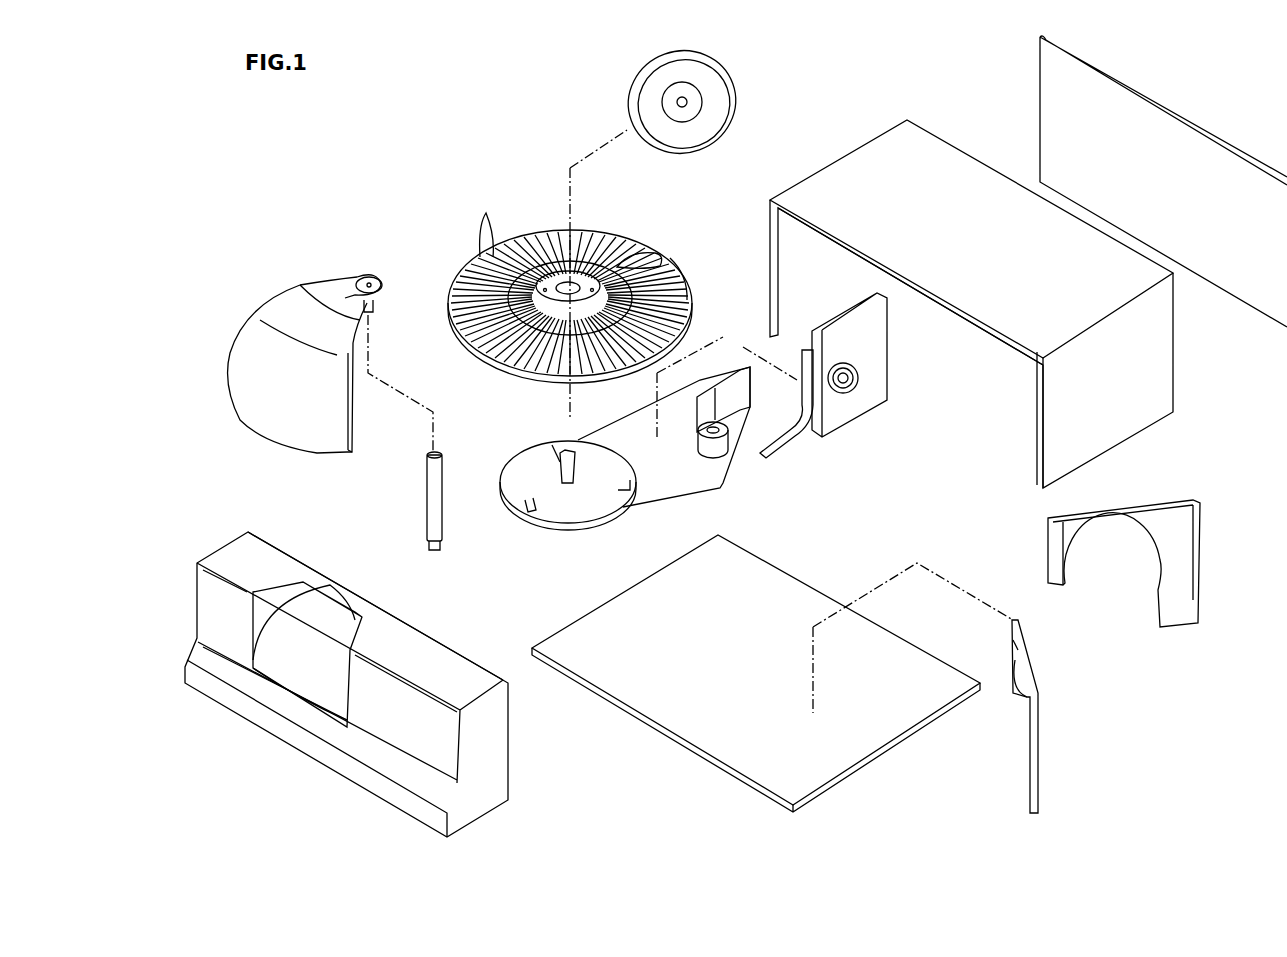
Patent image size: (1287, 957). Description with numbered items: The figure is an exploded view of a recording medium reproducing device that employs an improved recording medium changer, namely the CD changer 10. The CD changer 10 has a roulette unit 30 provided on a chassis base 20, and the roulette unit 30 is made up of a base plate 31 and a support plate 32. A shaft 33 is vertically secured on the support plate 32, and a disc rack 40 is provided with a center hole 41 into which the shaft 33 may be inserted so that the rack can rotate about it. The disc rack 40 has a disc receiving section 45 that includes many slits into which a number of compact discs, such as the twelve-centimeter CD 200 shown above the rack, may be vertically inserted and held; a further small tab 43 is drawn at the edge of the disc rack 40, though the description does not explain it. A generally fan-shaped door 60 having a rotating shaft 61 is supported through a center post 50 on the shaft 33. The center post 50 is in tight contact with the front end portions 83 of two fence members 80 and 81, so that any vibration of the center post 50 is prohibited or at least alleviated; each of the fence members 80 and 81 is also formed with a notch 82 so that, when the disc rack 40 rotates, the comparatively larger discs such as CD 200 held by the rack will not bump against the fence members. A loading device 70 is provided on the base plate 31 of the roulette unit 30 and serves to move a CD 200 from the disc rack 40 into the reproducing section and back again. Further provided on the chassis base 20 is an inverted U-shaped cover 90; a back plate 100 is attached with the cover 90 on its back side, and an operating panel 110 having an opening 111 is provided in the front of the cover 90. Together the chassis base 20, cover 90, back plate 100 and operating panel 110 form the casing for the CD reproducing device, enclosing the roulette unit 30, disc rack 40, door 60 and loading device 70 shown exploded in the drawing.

The CD changer 10 is at (400, 199).
The chassis base 20 is at (674, 768).
The roulette unit 30 is at (652, 433).
The base plate 31 is at (670, 470).
The support plate 32 is at (520, 467).
The shaft 33 is at (555, 445).
The disc rack 40 is at (621, 217).
The center hole 41 is at (563, 285).
The tab 43 is at (655, 256).
The disc receiving section 45 is at (487, 257).
The center post 50 is at (468, 546).
The fan-shaped door 60 is at (294, 264).
The rotating shaft 61 is at (370, 313).
The loading device 70 is at (910, 375).
The fence member 80 is at (1062, 639).
The fence member 81 is at (1208, 523).
The notch 82 is at (1023, 697).
The front end portion 83 is at (1010, 655).
The inverted U-shaped cover 90 is at (1150, 442).
The back plate 100 is at (1203, 102).
The operating panel 110 is at (346, 684).
The opening 111 is at (330, 692).
The CD 200 is at (710, 112).